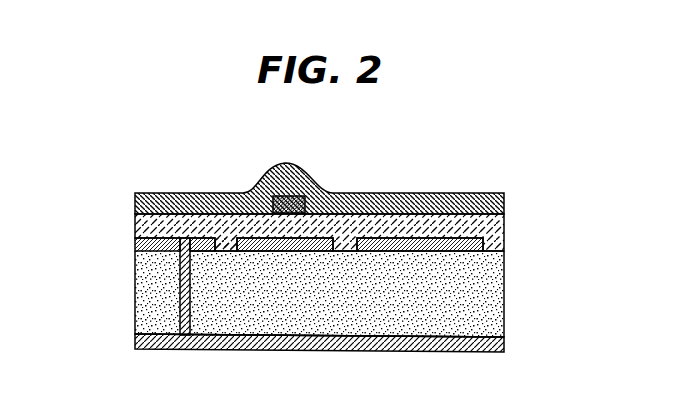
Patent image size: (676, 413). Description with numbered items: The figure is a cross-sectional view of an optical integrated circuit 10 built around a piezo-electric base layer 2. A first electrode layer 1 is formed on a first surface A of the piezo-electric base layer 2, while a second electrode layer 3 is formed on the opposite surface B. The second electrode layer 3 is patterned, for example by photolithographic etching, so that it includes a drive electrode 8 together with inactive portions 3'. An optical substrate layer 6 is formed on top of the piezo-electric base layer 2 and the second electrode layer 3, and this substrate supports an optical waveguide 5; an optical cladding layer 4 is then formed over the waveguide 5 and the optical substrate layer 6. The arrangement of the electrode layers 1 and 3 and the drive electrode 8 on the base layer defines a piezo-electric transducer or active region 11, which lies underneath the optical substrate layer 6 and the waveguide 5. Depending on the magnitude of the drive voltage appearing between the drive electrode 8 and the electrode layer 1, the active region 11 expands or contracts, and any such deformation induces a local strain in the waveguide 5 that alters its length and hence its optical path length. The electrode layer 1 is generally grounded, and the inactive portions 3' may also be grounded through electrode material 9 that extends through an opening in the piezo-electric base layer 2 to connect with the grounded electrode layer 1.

The first electrode layer 1 is at (490, 352).
The piezo-electric base layer 2 is at (487, 298).
The second electrode layer 3 is at (320, 239).
The inactive portions 3' is at (272, 194).
The optical cladding layer 4 is at (380, 195).
The optical waveguide 5 is at (295, 196).
The optical substrate layer 6 is at (506, 226).
The drive electrode 8 is at (250, 240).
The electrode material 9 is at (178, 297).
The optical integrated circuit 10 is at (97, 152).
The piezo-electric active region 11 is at (315, 300).
The first surface A is at (500, 323).
The opposite surface B is at (488, 259).